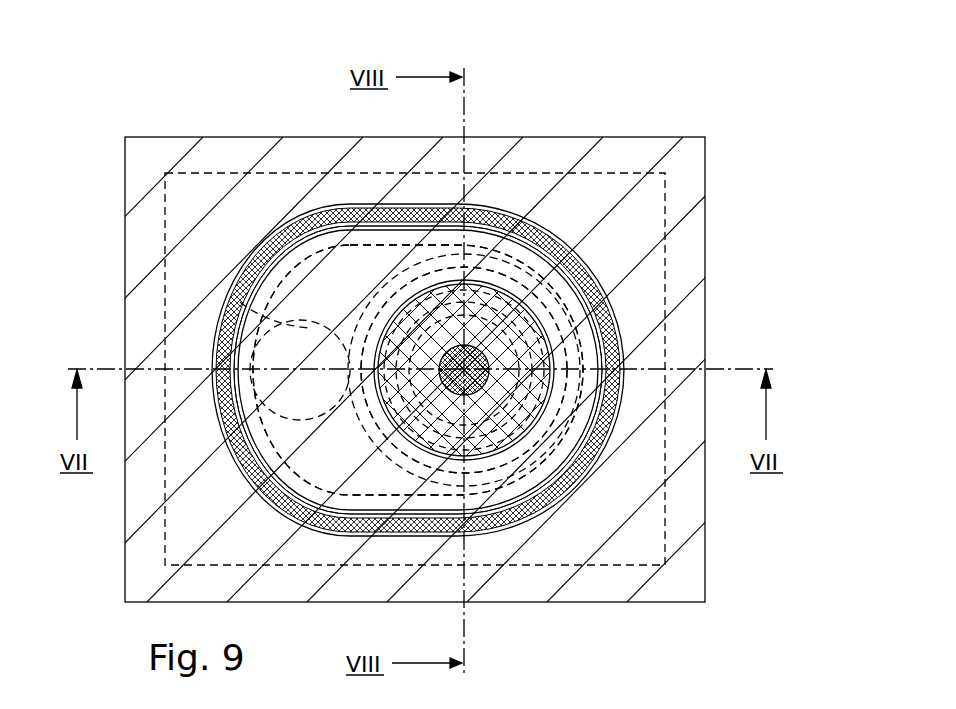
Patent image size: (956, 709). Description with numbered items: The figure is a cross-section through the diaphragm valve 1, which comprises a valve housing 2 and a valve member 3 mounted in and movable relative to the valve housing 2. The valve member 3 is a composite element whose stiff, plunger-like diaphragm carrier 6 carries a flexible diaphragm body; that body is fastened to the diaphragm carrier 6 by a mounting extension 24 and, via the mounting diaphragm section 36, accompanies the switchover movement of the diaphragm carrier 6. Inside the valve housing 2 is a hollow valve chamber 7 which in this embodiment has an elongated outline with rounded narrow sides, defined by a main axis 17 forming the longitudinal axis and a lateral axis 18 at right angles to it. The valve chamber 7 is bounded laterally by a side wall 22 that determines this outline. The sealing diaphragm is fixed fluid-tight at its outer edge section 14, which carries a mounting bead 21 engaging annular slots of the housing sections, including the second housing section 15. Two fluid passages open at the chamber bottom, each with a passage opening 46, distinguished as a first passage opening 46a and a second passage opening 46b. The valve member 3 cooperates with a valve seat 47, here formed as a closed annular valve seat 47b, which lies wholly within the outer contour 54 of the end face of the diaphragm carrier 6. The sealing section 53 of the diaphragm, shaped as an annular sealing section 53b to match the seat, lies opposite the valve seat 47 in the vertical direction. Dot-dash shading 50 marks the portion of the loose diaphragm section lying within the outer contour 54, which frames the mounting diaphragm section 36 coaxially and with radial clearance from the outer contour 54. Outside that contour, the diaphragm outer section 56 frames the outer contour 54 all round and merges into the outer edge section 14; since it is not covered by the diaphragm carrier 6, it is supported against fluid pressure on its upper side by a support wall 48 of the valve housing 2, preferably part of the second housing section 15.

The diaphragm valve 1 is at (725, 134).
The valve housing 2 is at (125, 548).
The valve member 3 is at (311, 276).
The diaphragm carrier 6 is at (533, 397).
The valve chamber 7 is at (395, 247).
The outer edge section 14 is at (517, 370).
The mounting bead 21 is at (545, 318).
The mounting diaphragm section 36 is at (620, 327).
The mounting extension 24 is at (489, 364).
The second housing section 15 is at (687, 328).
The main axis 17 is at (742, 369).
The lateral axis 18 is at (467, 108).
The side wall 22 is at (400, 505).
The passage opening 46 is at (494, 281).
The first passage opening 46a is at (522, 305).
The second passage opening 46b is at (250, 336).
The valve seat 47 is at (418, 443).
The annular valve seat 47b is at (540, 520).
The support wall 48 is at (275, 497).
The dot-dash shading 50 is at (340, 207).
The sealing section 53 is at (241, 279).
The annular sealing section 53b is at (300, 292).
The outer contour 54 is at (512, 443).
The diaphragm outer section 56 is at (597, 473).